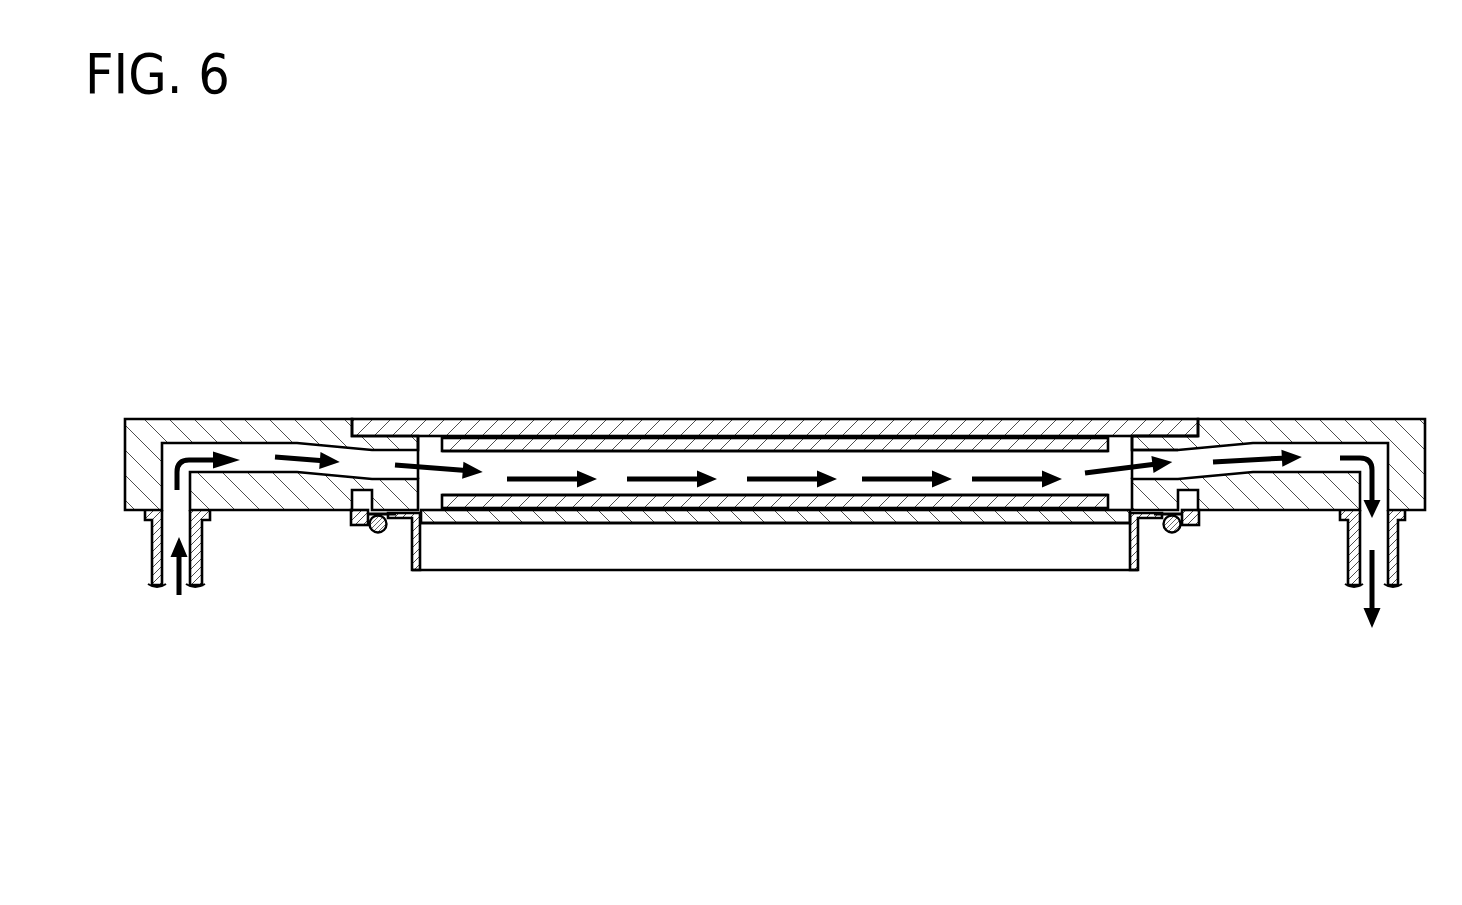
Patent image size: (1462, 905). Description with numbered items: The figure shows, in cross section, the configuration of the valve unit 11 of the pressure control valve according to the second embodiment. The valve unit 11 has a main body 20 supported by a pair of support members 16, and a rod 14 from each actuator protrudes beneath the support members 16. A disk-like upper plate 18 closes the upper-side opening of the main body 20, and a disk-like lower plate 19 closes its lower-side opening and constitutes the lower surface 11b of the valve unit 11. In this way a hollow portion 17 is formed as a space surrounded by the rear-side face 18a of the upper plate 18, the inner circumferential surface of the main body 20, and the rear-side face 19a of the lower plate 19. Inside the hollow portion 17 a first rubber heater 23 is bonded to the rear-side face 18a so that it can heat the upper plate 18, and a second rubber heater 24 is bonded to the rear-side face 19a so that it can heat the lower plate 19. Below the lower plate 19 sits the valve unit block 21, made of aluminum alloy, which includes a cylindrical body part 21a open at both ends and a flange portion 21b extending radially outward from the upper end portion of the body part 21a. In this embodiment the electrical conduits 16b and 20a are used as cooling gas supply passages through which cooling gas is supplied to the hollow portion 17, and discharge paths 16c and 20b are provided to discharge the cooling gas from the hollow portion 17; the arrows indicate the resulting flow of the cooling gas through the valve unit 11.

The valve unit 11 is at (1304, 376).
The lower surface 11b is at (786, 523).
The rod 14 is at (150, 542).
The support member 16 is at (205, 435).
The electrical conduit 16b is at (330, 447).
The discharge path 16c is at (1220, 446).
The hollow portion 17 is at (543, 459).
The upper plate 18 is at (997, 430).
The rear-side face of the upper plate 18a is at (794, 440).
The lower plate 19 is at (1053, 497).
The rear-side face of the lower plate 19a is at (865, 509).
The main body 20 is at (1160, 443).
The electrical conduit 20a is at (418, 450).
The discharge path 20b is at (1118, 440).
The valve unit block 21 is at (593, 543).
The body part 21a is at (420, 550).
The flange portion 21b is at (392, 531).
The first rubber heater 23 is at (607, 437).
The second rubber heater 24 is at (684, 495).